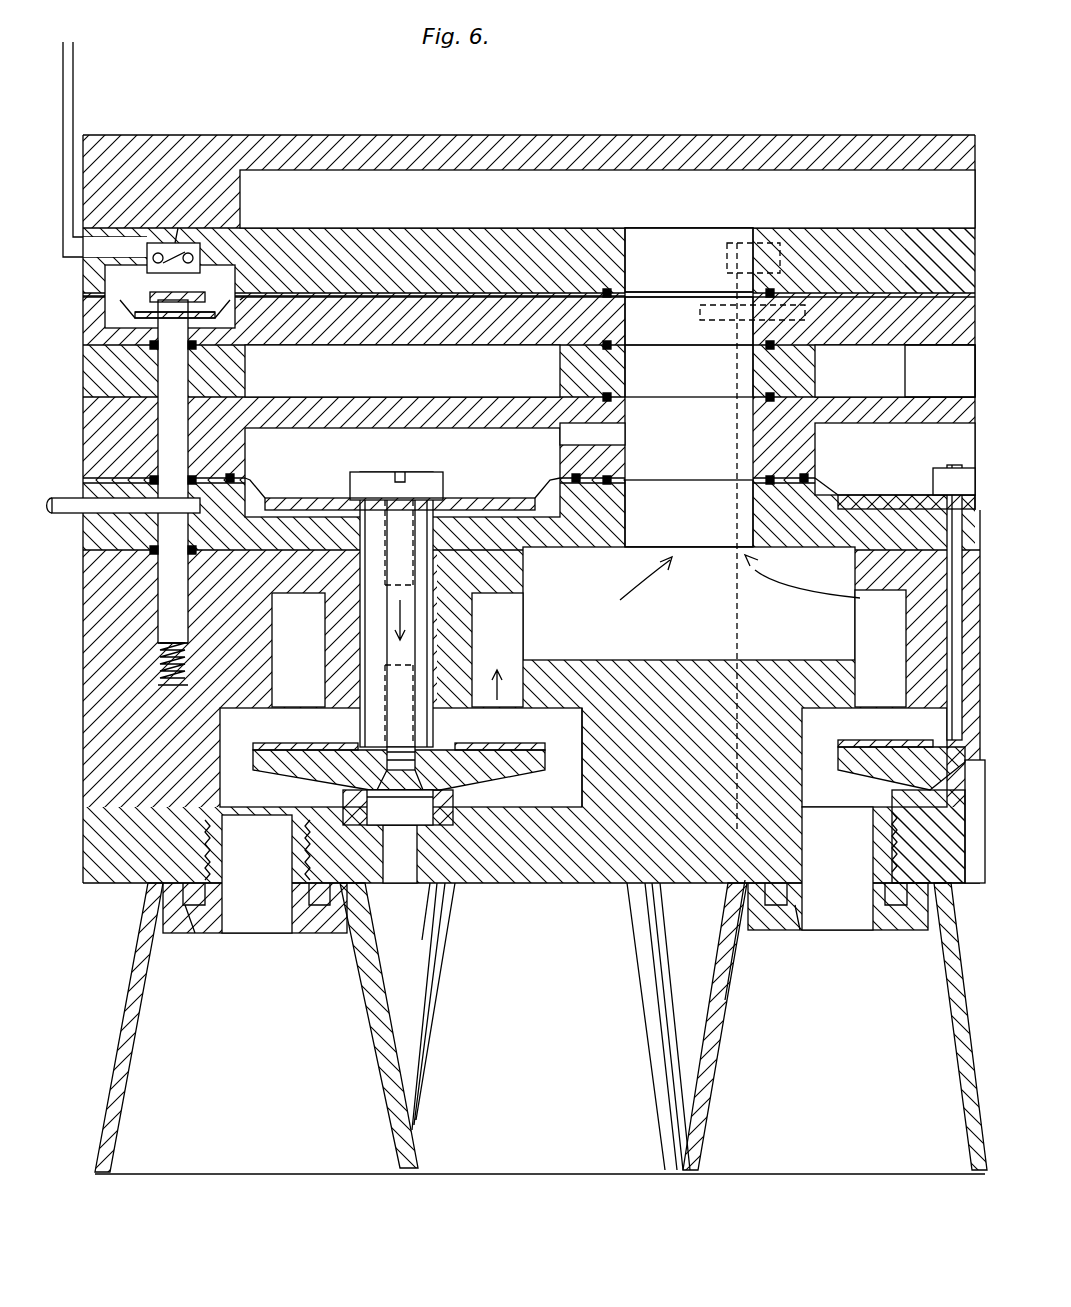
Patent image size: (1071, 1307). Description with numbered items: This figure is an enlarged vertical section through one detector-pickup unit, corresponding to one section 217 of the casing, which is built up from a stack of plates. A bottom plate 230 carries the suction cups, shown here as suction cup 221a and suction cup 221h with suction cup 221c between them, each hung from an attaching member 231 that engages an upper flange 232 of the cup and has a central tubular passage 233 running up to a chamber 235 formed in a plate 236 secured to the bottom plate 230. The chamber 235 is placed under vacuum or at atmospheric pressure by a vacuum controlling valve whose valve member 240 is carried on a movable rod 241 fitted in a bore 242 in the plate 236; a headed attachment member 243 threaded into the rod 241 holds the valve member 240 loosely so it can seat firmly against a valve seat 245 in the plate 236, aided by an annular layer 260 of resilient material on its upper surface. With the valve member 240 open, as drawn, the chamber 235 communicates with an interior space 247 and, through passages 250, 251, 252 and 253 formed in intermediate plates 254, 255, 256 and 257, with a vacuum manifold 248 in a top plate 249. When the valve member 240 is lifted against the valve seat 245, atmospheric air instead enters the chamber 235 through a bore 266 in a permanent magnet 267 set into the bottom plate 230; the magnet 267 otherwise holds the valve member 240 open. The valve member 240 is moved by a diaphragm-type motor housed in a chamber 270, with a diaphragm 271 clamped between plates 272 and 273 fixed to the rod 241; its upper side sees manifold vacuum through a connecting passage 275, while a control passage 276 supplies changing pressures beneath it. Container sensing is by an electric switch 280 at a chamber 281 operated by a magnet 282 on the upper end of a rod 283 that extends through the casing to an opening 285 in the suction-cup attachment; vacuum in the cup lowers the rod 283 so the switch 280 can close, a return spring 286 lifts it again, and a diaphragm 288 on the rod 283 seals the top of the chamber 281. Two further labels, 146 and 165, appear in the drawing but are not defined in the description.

The passage 146 is at (320, 650).
The nozzle bore 165 is at (435, 885).
The section 217 is at (124, 896).
The suction cup 221a is at (125, 1030).
The suction cup 221c is at (660, 1040).
The suction cup 221h is at (700, 1078).
The bottom plate 230 is at (700, 880).
The attaching member 231 is at (300, 945).
The upper flange 232 is at (320, 935).
The central tubular passage 233 is at (236, 925).
The chamber 235 is at (290, 735).
The plate 236 is at (705, 663).
The valve member 240 is at (545, 760).
The movable rod 241 is at (445, 645).
The bore 242 is at (437, 572).
The headed attachment member 243 is at (450, 790).
The valve seat 245 is at (583, 738).
The interior space 247 is at (725, 597).
The vacuum manifold 248 is at (860, 203).
The top plate 249 is at (722, 150).
The passage 250 is at (625, 522).
The passage 251 is at (625, 378).
The passage 252 is at (625, 328).
The passage 253 is at (625, 272).
The intermediate plate 254 is at (815, 445).
The intermediate plate 255 is at (815, 374).
The intermediate plate 256 is at (925, 330).
The intermediate plate 257 is at (905, 235).
The annular layer of resilient material 260 is at (497, 705).
The bore 266 is at (410, 800).
The permanent magnet 267 is at (343, 805).
The chamber 270 is at (520, 470).
The diaphragm 271 is at (270, 478).
The plate 272 is at (352, 478).
The plate 273 is at (402, 492).
The connecting passage 275 is at (625, 445).
The control passage 276 is at (125, 520).
The electric switch 280 is at (175, 243).
The chamber 281 is at (178, 295).
The magnet 282 is at (152, 300).
The rod 283 is at (178, 425).
The opening 285 is at (190, 935).
The return spring 286 is at (160, 668).
The diaphragm 288 is at (235, 312).